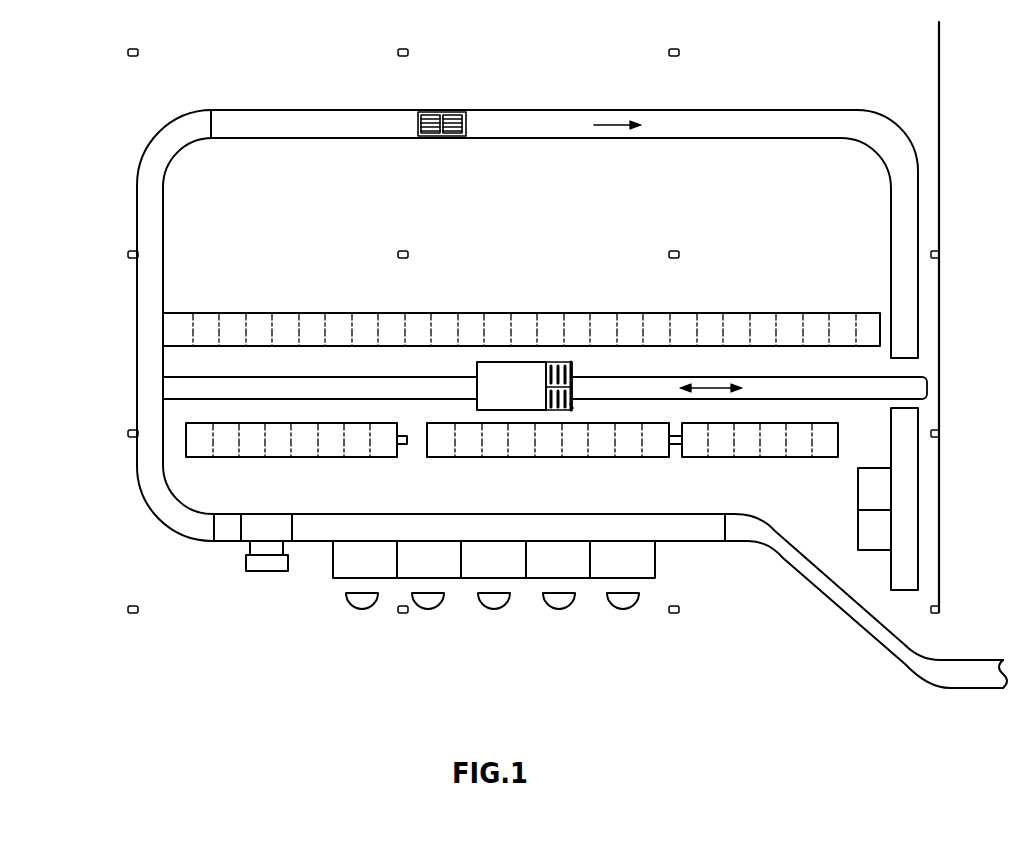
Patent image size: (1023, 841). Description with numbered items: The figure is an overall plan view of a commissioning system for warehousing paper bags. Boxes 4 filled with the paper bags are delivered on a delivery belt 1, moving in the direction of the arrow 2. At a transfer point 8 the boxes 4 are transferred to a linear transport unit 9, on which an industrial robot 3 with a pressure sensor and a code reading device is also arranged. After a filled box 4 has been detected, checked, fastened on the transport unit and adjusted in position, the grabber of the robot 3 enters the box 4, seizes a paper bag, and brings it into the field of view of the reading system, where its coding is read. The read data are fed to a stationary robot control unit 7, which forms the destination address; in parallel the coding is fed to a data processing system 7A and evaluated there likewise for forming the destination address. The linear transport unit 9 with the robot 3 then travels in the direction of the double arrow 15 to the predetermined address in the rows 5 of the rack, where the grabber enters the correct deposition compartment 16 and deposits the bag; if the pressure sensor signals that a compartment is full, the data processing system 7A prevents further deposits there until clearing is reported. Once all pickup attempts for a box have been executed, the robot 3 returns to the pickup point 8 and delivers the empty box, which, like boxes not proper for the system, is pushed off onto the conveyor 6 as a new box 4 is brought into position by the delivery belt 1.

The delivery belt 1 is at (748, 112).
The arrow 2 is at (612, 125).
The industrial robot 3 is at (522, 398).
The box 4 is at (446, 117).
The rows of a rack 5 is at (360, 426).
The conveyor 6 is at (910, 492).
The robot control unit 7 is at (866, 485).
The data processing system 7A is at (866, 533).
The transfer point 8 is at (910, 379).
The linear transport unit 9 is at (571, 404).
The double arrow 15 is at (697, 386).
The deposition compartment 16 is at (258, 332).